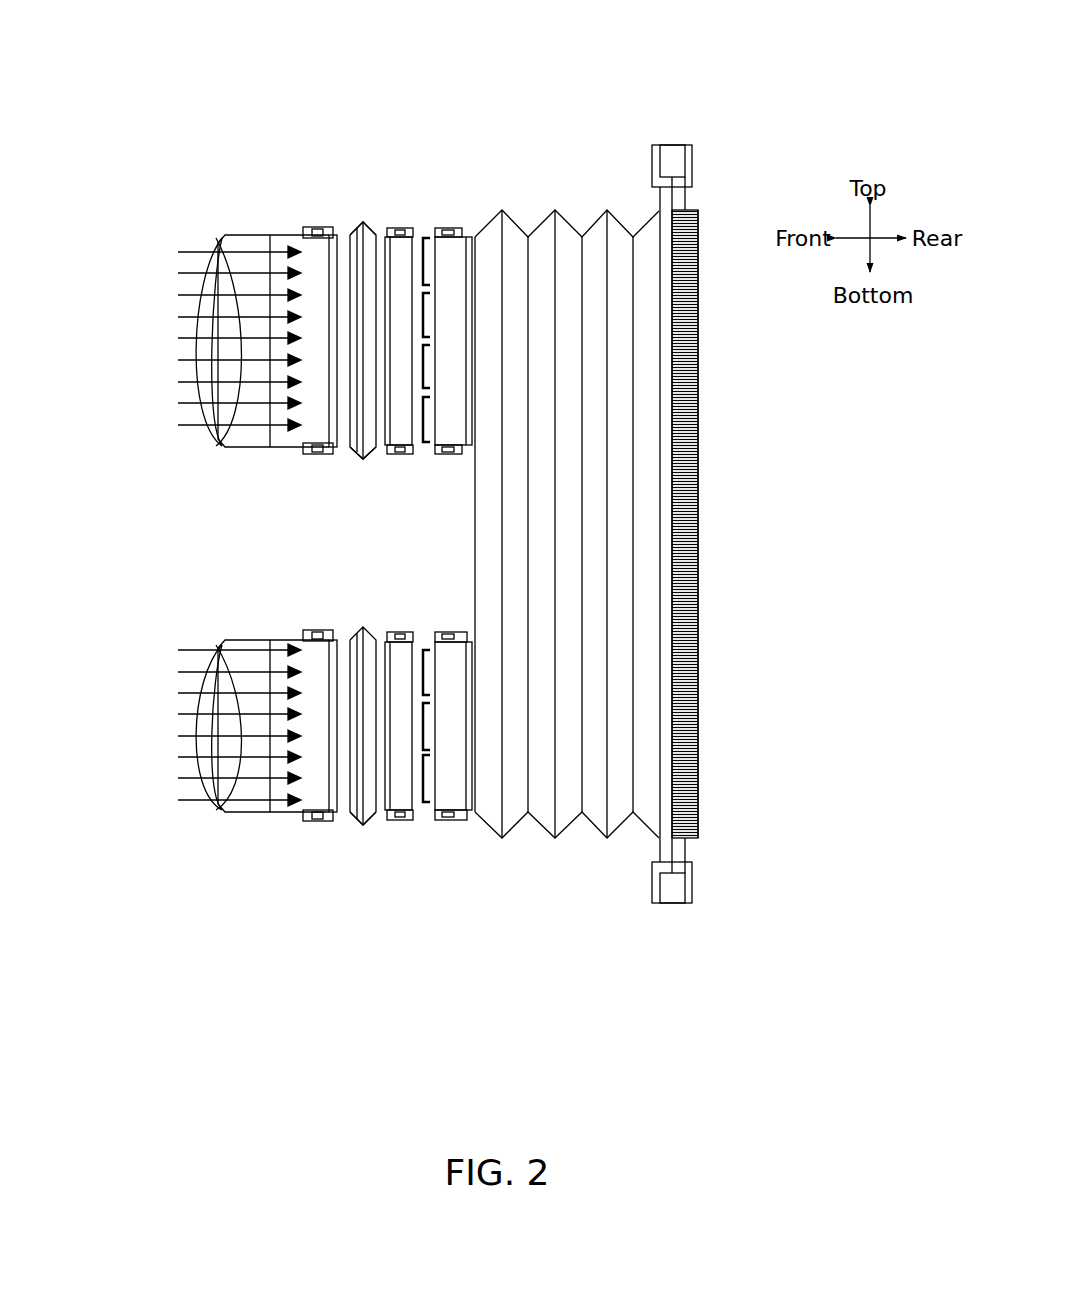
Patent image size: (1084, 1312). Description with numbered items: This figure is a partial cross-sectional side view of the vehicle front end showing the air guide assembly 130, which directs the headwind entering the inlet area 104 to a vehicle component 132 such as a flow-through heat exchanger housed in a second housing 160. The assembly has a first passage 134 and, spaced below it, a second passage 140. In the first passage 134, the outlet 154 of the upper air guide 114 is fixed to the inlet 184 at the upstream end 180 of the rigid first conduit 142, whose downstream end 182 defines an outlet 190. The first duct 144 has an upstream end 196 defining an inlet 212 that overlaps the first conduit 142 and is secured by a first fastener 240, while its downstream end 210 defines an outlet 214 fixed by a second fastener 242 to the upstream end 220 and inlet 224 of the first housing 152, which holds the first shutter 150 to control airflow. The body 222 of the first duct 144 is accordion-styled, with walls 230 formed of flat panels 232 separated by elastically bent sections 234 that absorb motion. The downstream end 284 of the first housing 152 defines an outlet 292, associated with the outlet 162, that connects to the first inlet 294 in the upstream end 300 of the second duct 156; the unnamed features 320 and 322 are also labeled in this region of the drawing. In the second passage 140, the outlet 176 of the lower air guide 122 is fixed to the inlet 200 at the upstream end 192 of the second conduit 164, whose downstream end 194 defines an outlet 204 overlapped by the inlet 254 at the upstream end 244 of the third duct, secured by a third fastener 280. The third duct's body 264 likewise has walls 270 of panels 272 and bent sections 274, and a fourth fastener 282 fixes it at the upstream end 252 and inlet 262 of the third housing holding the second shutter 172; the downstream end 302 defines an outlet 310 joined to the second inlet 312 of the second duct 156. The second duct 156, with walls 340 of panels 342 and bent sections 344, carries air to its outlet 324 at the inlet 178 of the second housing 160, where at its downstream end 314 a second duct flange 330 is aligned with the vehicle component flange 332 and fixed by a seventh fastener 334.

The inlet area 104 is at (96, 262).
The upper air guide 114 is at (232, 284).
The lower air guide 122 is at (380, 715).
The air guide assembly 130 is at (382, 228).
The vehicle component 132 is at (698, 450).
The first passage 134 is at (331, 211).
The second passage 140 is at (375, 843).
The first conduit 142 is at (329, 235).
The first duct 144 is at (352, 228).
The first shutter 150 is at (440, 233).
The first housing 152 is at (413, 233).
The outlet of the upper air guide 154 is at (258, 268).
The second duct 156 is at (605, 213).
The second housing 160 is at (436, 806).
The outlet of the first housing 162 is at (433, 447).
The second conduit 164 is at (330, 800).
The second shutter 172 is at (430, 810).
The outlet of the lower air guide 176 is at (245, 707).
The inlet of the second housing 178 is at (672, 520).
The upstream end of the first conduit 180 is at (256, 268).
The downstream end of the first conduit 182 is at (338, 238).
The inlet of the first conduit 184 is at (290, 405).
The outlet of the first conduit 190 is at (343, 375).
The upstream end of the second conduit 192 is at (270, 697).
The downstream end of the second conduit 194 is at (345, 645).
The upstream end of the first duct 196 is at (305, 447).
The inlet of the second conduit 200 is at (310, 790).
The outlet of the second conduit 204 is at (340, 768).
The downstream end of the first duct 210 is at (423, 448).
The inlet of the first duct 212 is at (330, 690).
The outlet of the first duct 214 is at (357, 717).
The upstream end of the first housing 220 is at (402, 225).
The body of the first duct 222 is at (372, 233).
The inlet of the first housing 224 is at (340, 298).
The walls of the first duct 230 is at (358, 446).
The panels of the first duct 232 is at (363, 452).
The bent sections of the first duct 234 is at (363, 222).
The first fastener 240 is at (309, 263).
The second fastener 242 is at (405, 182).
The upstream end of the third duct 244 is at (335, 815).
The upstream end of the third housing 252 is at (395, 660).
The inlet of the third duct 254 is at (322, 787).
The inlet of the third housing 262 is at (390, 688).
The body of the third duct 264 is at (340, 812).
The walls of the third duct 270 is at (352, 640).
The panels of the third duct 272 is at (367, 642).
The bent sections of the third duct 274 is at (380, 812).
The third fastener 280 is at (302, 637).
The fourth fastener 282 is at (414, 810).
The downstream end of the first housing 284 is at (477, 235).
The outlet of the first housing 292 is at (463, 300).
The first inlet of the second duct 294 is at (463, 337).
The upstream end of the second duct 300 is at (442, 820).
The downstream end of the third housing 302 is at (457, 672).
The outlet of the third housing 310 is at (467, 707).
The second inlet of the second duct 312 is at (575, 752).
The downstream end of the second duct 314 is at (700, 805).
The housing rear wall 320 is at (438, 233).
The filter pleat 322 is at (462, 713).
The outlet of the second duct 324 is at (700, 592).
The second duct flange 330 is at (653, 210).
The vehicle component flange 332 is at (688, 195).
The seventh fastener 334 is at (693, 157).
The walls of the second duct 340 is at (645, 322).
The panels of the second duct 342 is at (518, 825).
The bent sections of the second duct 344 is at (498, 230).